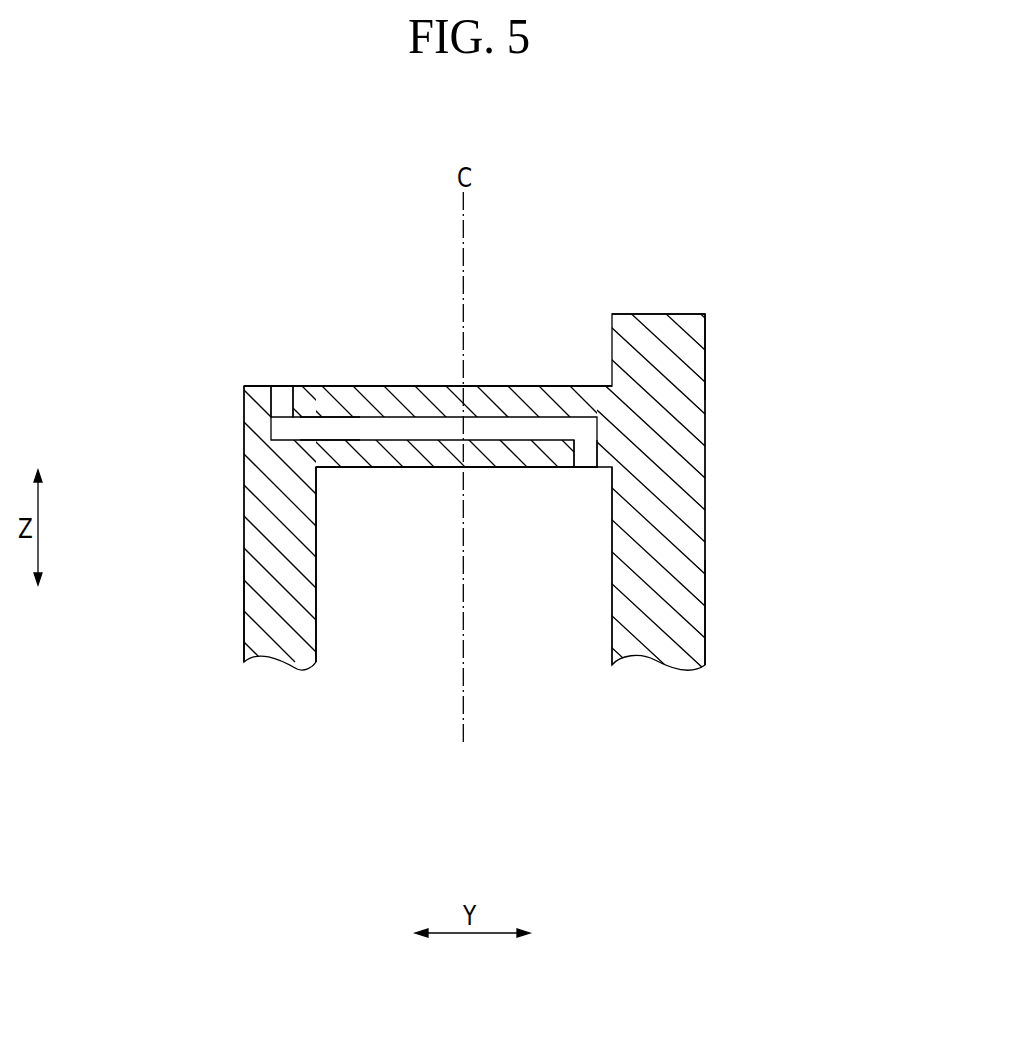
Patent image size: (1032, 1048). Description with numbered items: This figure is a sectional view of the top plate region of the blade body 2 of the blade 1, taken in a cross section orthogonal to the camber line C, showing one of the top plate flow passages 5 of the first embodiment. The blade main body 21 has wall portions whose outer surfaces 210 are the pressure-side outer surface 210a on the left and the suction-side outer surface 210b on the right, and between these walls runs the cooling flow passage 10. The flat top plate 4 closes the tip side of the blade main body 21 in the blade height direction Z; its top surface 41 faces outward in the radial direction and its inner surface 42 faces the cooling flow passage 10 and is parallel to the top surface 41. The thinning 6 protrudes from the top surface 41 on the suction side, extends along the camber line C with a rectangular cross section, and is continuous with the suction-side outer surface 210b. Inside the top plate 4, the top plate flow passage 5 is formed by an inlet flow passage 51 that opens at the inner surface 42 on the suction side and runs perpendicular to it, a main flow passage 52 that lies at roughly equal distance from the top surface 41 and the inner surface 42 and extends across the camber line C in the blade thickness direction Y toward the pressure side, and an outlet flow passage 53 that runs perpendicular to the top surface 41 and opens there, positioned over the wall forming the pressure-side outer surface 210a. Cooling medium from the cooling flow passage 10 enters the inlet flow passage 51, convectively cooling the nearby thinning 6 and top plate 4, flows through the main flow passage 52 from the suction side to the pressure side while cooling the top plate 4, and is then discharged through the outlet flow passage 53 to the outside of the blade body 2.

The imaging device 1 is at (458, 459).
The blade body 2 is at (692, 288).
The top plate 4 is at (376, 395).
The top plate flow passage 5 is at (458, 350).
The thinning 6 is at (680, 358).
The cooling flow passage 10 is at (316, 637).
The blade main body 21 is at (253, 612).
The top surface 41 is at (528, 386).
The inner surface 42 is at (370, 467).
The inlet flow passage 51 is at (602, 455).
The main flow passage 52 is at (326, 418).
The outlet flow passage 53 is at (273, 410).
The wall portion 210 is at (490, 489).
The pressure-side outer surface 210a is at (244, 557).
The suction-side outer surface 210b is at (707, 538).